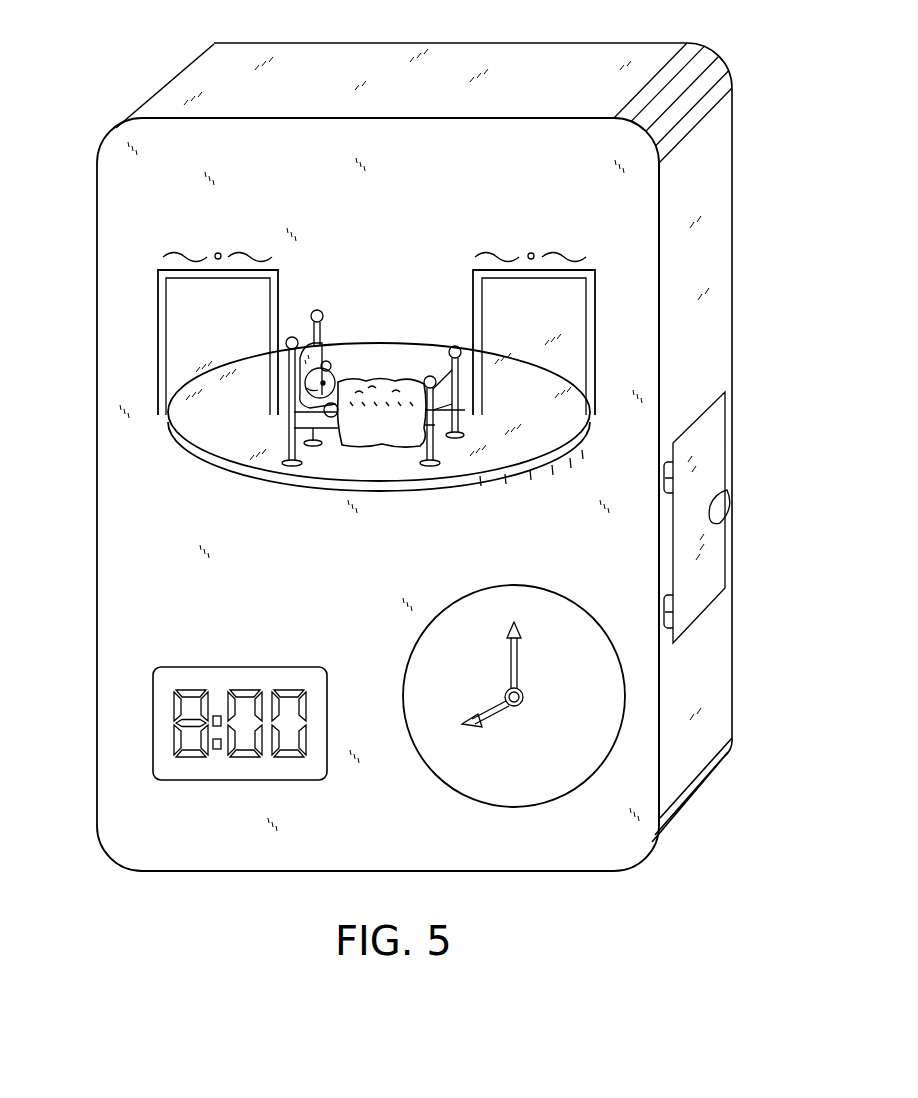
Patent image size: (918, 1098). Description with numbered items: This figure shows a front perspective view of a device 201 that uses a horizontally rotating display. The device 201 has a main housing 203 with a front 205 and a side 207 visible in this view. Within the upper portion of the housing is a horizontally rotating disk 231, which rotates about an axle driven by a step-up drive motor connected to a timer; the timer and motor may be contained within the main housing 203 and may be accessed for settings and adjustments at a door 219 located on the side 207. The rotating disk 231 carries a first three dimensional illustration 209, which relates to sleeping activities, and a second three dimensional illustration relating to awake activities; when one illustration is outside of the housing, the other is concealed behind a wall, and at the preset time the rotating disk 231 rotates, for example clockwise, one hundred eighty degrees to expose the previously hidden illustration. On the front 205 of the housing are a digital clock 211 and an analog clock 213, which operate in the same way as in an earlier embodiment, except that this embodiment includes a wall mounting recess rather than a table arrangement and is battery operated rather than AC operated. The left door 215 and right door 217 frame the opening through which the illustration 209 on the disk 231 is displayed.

The device 201 is at (108, 68).
The main housing 203 is at (107, 519).
The front 205 is at (318, 580).
The side 207 is at (727, 717).
The first three dimensional illustration 209 is at (366, 390).
The digital clock 211 is at (183, 669).
The analog clock 213 is at (438, 766).
The left door 215 is at (276, 298).
The right door 217 is at (591, 313).
The door 219 is at (718, 462).
The horizontally rotating disk 231 is at (403, 471).